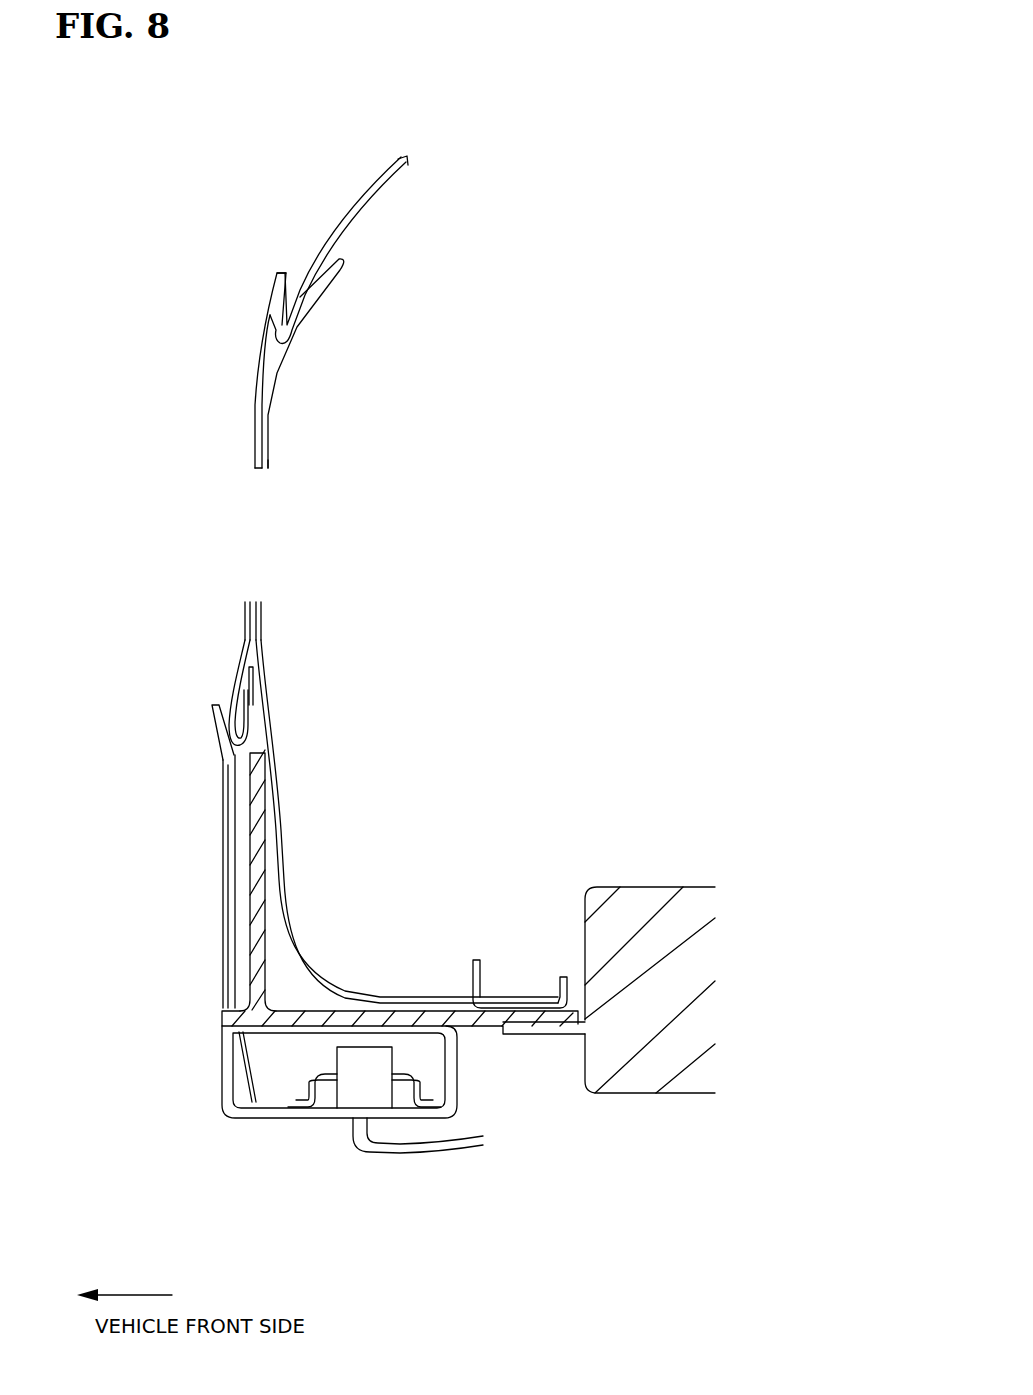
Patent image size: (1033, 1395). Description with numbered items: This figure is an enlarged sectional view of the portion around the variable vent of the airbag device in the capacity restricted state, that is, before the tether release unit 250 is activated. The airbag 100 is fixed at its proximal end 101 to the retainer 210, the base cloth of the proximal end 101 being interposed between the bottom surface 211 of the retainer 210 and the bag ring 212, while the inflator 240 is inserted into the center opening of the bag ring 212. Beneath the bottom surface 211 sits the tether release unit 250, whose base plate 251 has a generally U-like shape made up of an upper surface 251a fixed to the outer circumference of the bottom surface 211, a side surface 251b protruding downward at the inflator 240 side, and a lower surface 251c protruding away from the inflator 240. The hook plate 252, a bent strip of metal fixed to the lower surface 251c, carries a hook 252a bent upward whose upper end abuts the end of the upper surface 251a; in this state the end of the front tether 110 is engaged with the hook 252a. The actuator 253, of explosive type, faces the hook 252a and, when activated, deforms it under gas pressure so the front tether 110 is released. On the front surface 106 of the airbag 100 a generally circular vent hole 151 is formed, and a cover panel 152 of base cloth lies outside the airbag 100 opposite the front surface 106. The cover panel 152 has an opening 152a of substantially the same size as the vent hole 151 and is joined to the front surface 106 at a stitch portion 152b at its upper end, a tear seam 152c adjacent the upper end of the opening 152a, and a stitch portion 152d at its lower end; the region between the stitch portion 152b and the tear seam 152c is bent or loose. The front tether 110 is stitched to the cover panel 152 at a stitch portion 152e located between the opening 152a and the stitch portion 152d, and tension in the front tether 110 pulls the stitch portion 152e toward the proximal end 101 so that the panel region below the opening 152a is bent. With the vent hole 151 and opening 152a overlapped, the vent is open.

The airbag 100 is at (169, 238).
The proximal end 101 is at (315, 985).
The front surface 106 is at (257, 625).
The front tether 110 is at (227, 820).
The vent hole 151 is at (289, 537).
The cover panel 152 is at (188, 363).
The opening 152a is at (222, 537).
The stitch portion 152b is at (263, 320).
The tear seam 152c is at (275, 440).
The stitch portion 152d is at (255, 678).
The stitch portion 152e is at (215, 740).
The retainer 210 is at (255, 910).
The bottom surface 211 is at (343, 1012).
The bag ring 212 is at (527, 996).
The inflator 240 is at (718, 938).
The tether release unit 250 is at (413, 1151).
The base plate 251 is at (526, 1119).
The upper surface 251a is at (403, 1028).
The side surface 251b is at (458, 1072).
The lower surface 251c is at (425, 1103).
The hook plate 252 is at (259, 1120).
The hook 252a is at (225, 1067).
The actuator 253 is at (352, 1107).